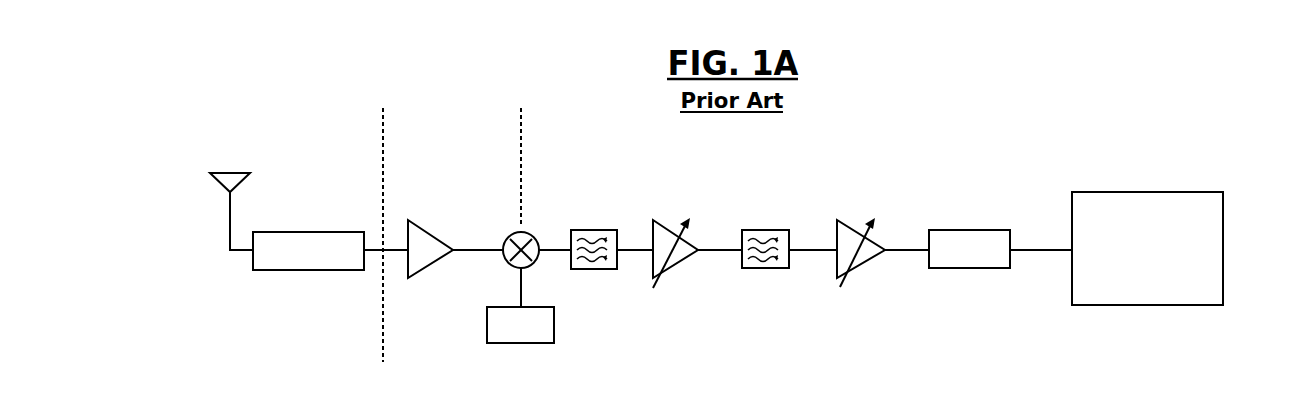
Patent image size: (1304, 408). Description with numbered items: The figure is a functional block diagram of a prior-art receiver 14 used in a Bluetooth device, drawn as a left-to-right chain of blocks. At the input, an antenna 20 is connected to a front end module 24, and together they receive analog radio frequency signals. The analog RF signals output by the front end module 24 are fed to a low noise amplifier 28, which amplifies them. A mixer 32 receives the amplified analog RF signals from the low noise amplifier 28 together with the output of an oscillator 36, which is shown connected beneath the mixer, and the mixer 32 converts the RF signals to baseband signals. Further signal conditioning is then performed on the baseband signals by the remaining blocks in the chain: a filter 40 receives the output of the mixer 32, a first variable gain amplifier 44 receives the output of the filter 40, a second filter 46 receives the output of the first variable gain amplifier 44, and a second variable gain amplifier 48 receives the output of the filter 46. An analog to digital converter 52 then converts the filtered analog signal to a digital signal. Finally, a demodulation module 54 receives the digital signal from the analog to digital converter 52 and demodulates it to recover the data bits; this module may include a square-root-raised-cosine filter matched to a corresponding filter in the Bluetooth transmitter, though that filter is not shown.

The receiver 14 is at (1211, 118).
The antenna 20 is at (228, 172).
The front end module 24 is at (303, 270).
The low noise amplifier 28 is at (433, 263).
The mixer 32 is at (505, 235).
The oscillator 36 is at (520, 343).
The filter 40 is at (597, 230).
The first variable gain amplifier 44 is at (673, 231).
The filter 46 is at (760, 230).
The second variable gain amplifier 48 is at (852, 229).
The analog to digital converter 52 is at (960, 230).
The demodulation module 54 is at (1123, 192).